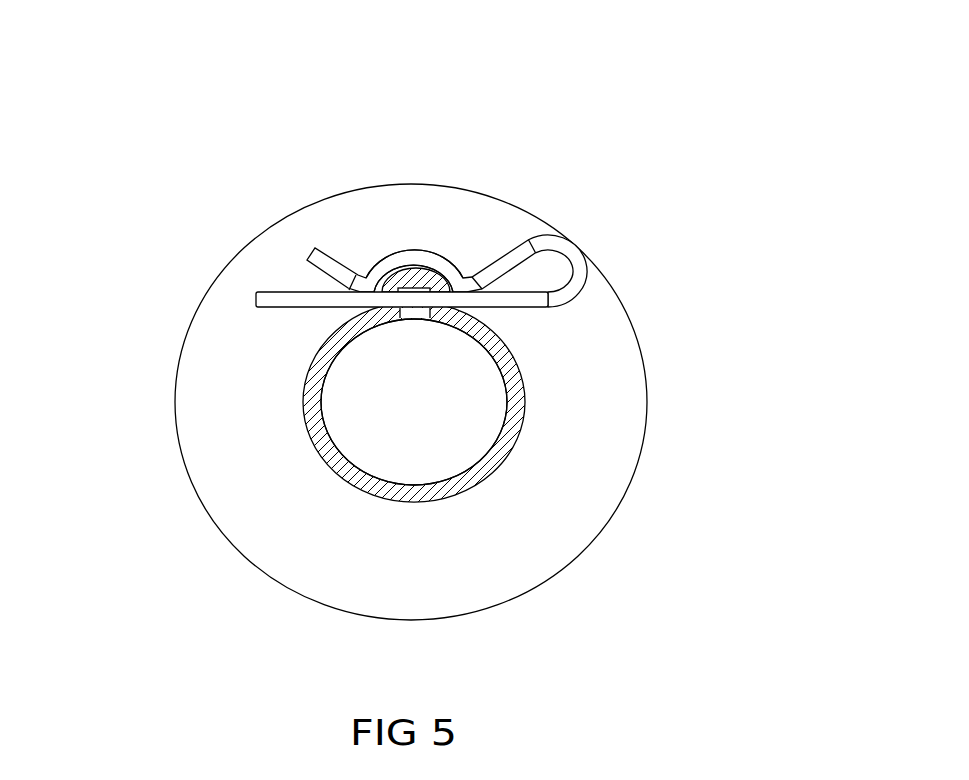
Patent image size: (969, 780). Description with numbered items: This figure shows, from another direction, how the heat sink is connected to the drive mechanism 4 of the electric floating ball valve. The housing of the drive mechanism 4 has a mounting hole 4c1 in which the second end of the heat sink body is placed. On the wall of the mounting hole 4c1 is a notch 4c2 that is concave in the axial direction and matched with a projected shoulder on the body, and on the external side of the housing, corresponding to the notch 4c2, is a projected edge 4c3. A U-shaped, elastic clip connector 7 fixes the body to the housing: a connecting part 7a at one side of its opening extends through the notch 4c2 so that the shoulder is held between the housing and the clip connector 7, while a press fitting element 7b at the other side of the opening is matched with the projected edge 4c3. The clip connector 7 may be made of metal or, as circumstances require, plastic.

The drive mechanism 4 is at (568, 360).
The mounting hole 4c1 is at (463, 403).
The notch 4c2 is at (418, 302).
The projected edge 4c3 is at (432, 280).
The clip connector 7 is at (577, 277).
The connecting part 7a is at (337, 300).
The press fitting element 7b is at (402, 262).